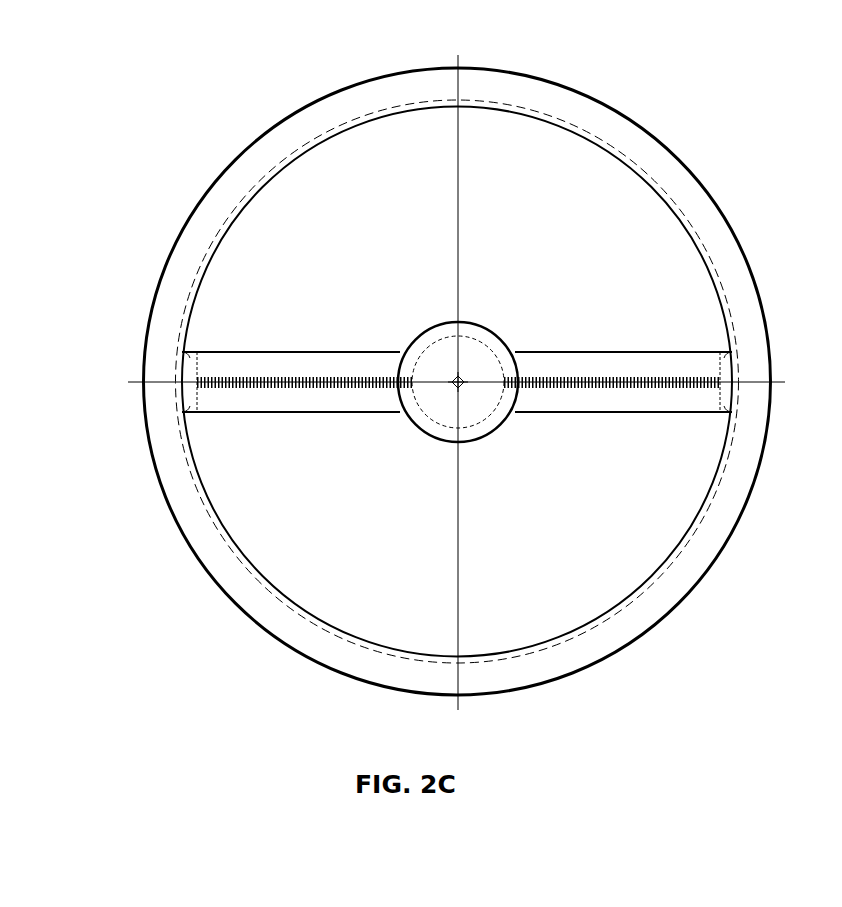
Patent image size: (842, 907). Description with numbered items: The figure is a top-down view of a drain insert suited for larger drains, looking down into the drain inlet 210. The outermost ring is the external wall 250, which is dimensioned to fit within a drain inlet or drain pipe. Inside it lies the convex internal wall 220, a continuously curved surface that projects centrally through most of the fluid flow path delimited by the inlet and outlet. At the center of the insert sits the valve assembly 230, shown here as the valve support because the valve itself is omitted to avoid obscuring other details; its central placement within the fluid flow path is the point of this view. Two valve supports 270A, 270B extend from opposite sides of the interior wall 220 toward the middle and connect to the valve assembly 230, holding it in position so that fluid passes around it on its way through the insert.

The drain inlet 210 is at (342, 258).
The convex internal wall 220 is at (553, 162).
The valve support 230 is at (492, 437).
The external wall 250 is at (152, 460).
The valve support 270A is at (280, 415).
The valve support 270B is at (607, 413).